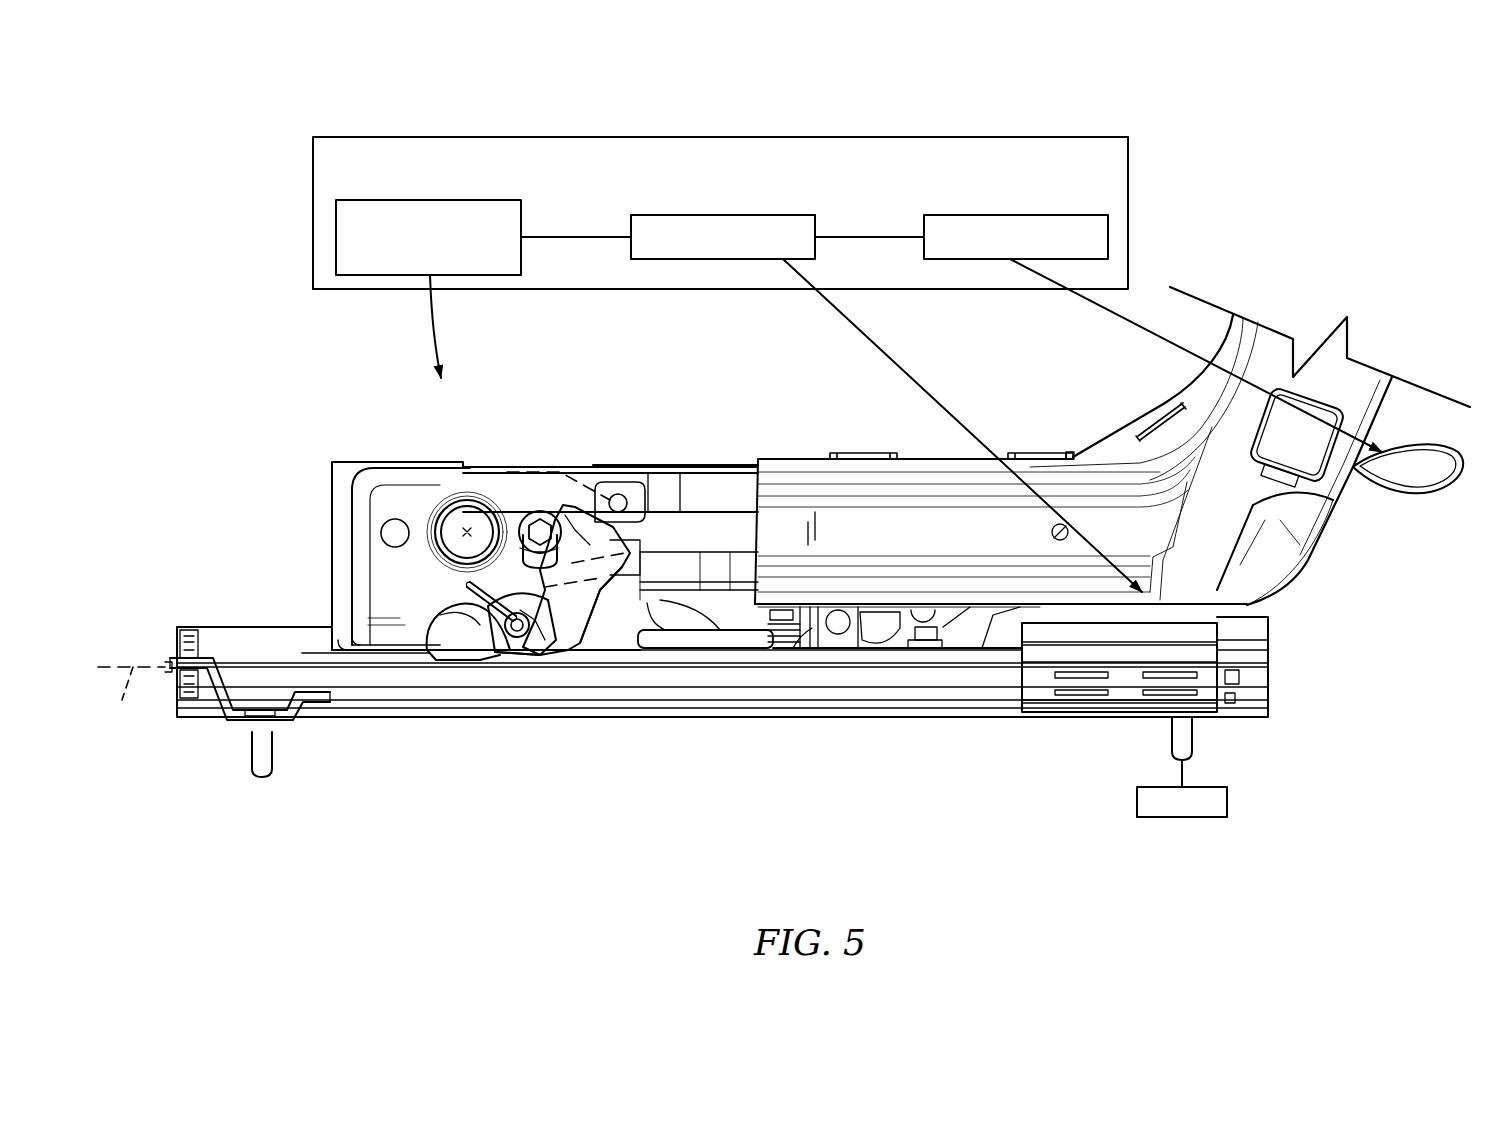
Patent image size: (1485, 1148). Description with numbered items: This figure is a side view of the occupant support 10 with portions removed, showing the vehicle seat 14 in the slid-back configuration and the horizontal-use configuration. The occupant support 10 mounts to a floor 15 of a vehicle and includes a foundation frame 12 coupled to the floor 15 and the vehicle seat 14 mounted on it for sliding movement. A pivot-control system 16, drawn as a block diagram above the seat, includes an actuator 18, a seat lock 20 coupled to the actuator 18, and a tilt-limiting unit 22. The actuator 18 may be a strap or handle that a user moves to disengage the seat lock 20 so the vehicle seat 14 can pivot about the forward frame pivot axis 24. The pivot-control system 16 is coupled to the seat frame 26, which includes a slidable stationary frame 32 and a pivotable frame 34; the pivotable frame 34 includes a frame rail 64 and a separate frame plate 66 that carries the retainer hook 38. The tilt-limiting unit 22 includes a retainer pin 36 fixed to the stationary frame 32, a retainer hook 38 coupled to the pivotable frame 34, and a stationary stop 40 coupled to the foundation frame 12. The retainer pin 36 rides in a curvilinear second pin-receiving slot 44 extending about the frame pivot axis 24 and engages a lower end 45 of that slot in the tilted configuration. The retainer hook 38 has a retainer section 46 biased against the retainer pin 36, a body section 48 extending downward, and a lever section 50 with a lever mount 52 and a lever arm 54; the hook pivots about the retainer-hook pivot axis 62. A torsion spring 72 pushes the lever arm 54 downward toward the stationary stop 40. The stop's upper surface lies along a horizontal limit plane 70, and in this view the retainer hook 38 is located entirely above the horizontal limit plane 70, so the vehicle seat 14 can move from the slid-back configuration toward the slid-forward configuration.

The occupant support 10 is at (1336, 215).
The foundation frame 12 is at (900, 735).
The vehicle seat 14 is at (761, 443).
The floor 15 is at (1227, 800).
The pivot-control system 16 is at (718, 137).
The actuator 18 is at (1128, 238).
The seat lock 20 is at (718, 259).
The tilt-limiting unit 22 is at (336, 239).
The frame pivot axis 24 is at (467, 530).
The seat frame 26 is at (540, 611).
The stationary frame 32 is at (340, 529).
The pivotable frame 34 is at (669, 470).
The retainer pin 36 is at (532, 506).
The retainer hook 38 is at (633, 558).
The stationary stop 40 is at (304, 735).
The second pin-receiving slot 44 is at (512, 553).
The lower end 45 is at (577, 642).
The retainer section 46 is at (593, 498).
The body section 48 is at (633, 642).
The lever section 50 is at (507, 662).
The lever mount 52 is at (541, 662).
The lever arm 54 is at (430, 664).
The retainer-hook pivot axis 62 is at (523, 637).
The frame rail 64 is at (709, 465).
The frame plate 66 is at (553, 462).
The horizontal limit plane 70 is at (135, 699).
The torsion spring 72 is at (447, 601).